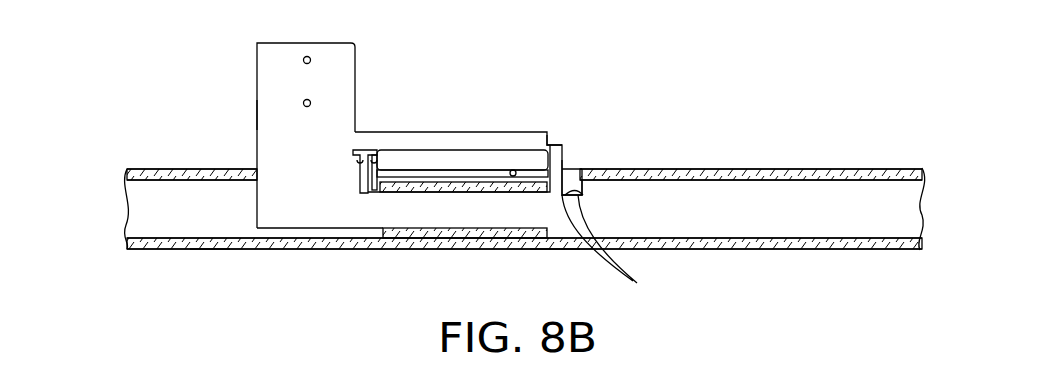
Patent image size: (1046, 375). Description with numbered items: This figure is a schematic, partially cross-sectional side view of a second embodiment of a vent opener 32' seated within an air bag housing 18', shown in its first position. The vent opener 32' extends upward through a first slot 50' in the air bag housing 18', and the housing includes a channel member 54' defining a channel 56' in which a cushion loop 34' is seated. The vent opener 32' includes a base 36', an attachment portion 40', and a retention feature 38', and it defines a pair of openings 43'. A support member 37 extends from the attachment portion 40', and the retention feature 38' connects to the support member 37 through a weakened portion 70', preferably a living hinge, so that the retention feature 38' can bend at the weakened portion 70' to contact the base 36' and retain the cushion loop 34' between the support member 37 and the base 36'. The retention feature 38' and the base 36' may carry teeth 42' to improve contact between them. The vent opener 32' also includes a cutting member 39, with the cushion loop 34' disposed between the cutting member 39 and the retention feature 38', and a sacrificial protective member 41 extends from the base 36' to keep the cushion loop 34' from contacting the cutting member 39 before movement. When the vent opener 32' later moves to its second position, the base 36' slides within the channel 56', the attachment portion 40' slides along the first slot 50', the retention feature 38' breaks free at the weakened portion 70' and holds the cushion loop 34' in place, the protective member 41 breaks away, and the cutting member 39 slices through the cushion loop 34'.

The air bag housing 18' is at (524, 167).
The vent opener 32' is at (231, 96).
The cushion loop 34' is at (463, 239).
The base 36' is at (553, 273).
The support member 37 is at (470, 132).
The retention feature 38' is at (614, 152).
The cutting member 39 is at (362, 151).
The attachment portion 40' is at (299, 117).
The protective member 41 is at (375, 155).
The teeth 42' is at (604, 249).
The openings 43' is at (371, 74).
The first slot 50' is at (465, 111).
The channel member 54' is at (213, 283).
The channel 56' is at (507, 265).
The weakened portion 70' is at (589, 112).